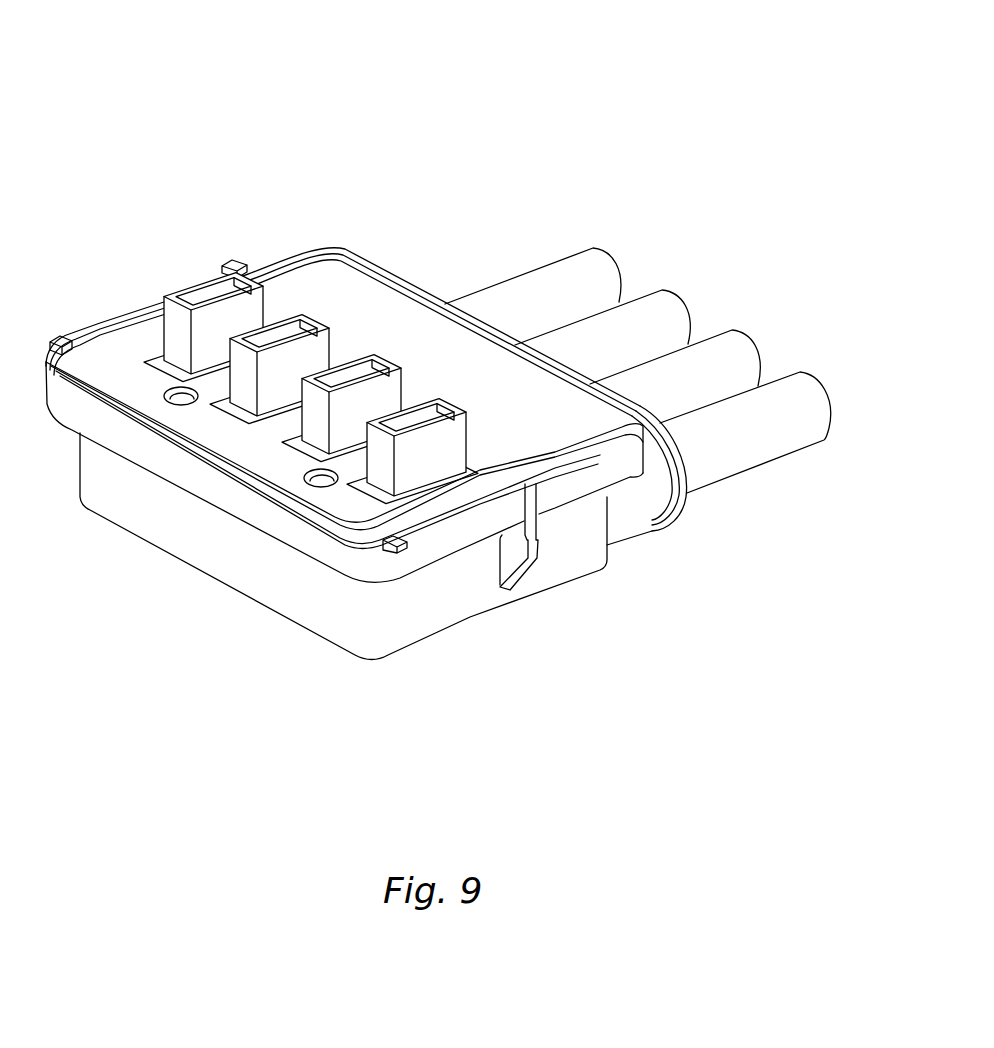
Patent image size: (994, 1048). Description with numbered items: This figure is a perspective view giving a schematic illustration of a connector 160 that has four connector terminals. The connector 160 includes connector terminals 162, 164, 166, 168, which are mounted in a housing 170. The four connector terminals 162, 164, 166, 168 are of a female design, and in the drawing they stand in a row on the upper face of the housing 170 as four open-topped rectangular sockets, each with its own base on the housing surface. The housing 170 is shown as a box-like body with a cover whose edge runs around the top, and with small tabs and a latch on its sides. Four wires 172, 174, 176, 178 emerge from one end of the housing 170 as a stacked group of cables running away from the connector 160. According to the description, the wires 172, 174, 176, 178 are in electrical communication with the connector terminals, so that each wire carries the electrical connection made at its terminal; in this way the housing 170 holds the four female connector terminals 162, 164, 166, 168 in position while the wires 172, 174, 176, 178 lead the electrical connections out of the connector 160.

The connector 160 is at (459, 106).
The connector terminal 162 is at (213, 287).
The connector terminal 164 is at (307, 322).
The connector terminal 166 is at (387, 360).
The connector terminal 168 is at (460, 422).
The housing 170 is at (140, 343).
The wire 172 is at (597, 265).
The wire 174 is at (668, 300).
The wire 176 is at (742, 350).
The wire 178 is at (810, 413).